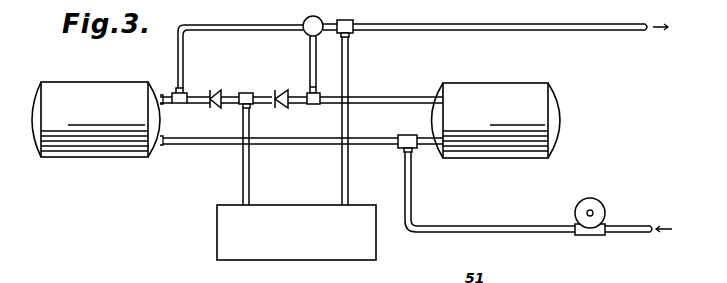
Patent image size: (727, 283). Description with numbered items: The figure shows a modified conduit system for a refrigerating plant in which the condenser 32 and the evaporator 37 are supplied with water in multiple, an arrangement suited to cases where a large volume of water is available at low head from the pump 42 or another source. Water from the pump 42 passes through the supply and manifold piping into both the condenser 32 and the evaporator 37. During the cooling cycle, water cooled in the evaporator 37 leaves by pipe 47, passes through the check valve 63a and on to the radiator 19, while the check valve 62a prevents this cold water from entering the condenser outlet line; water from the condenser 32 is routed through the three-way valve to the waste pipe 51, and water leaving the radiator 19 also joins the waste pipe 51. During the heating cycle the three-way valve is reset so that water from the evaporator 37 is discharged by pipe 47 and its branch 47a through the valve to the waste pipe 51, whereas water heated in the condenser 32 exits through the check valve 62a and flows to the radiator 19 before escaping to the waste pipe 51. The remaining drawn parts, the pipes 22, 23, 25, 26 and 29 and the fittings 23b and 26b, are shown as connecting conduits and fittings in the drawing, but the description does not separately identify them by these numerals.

The radiator 19 is at (217, 226).
The pipe 22 is at (348, 176).
The pipe 23 is at (468, 226).
The valve 23b is at (315, 13).
The pipe 25 is at (303, 144).
The pipe 26 is at (386, 97).
The tee fitting 26b is at (307, 48).
The pipe 29 is at (243, 170).
The condenser 32 is at (509, 77).
The evaporator 37 is at (104, 76).
The pump 42 is at (599, 203).
The pipe 47 is at (197, 92).
The branch pipe 47a is at (215, 19).
The waste pipe 51 is at (486, 22).
The check valve 62a is at (279, 86).
The check valve 63a is at (224, 87).